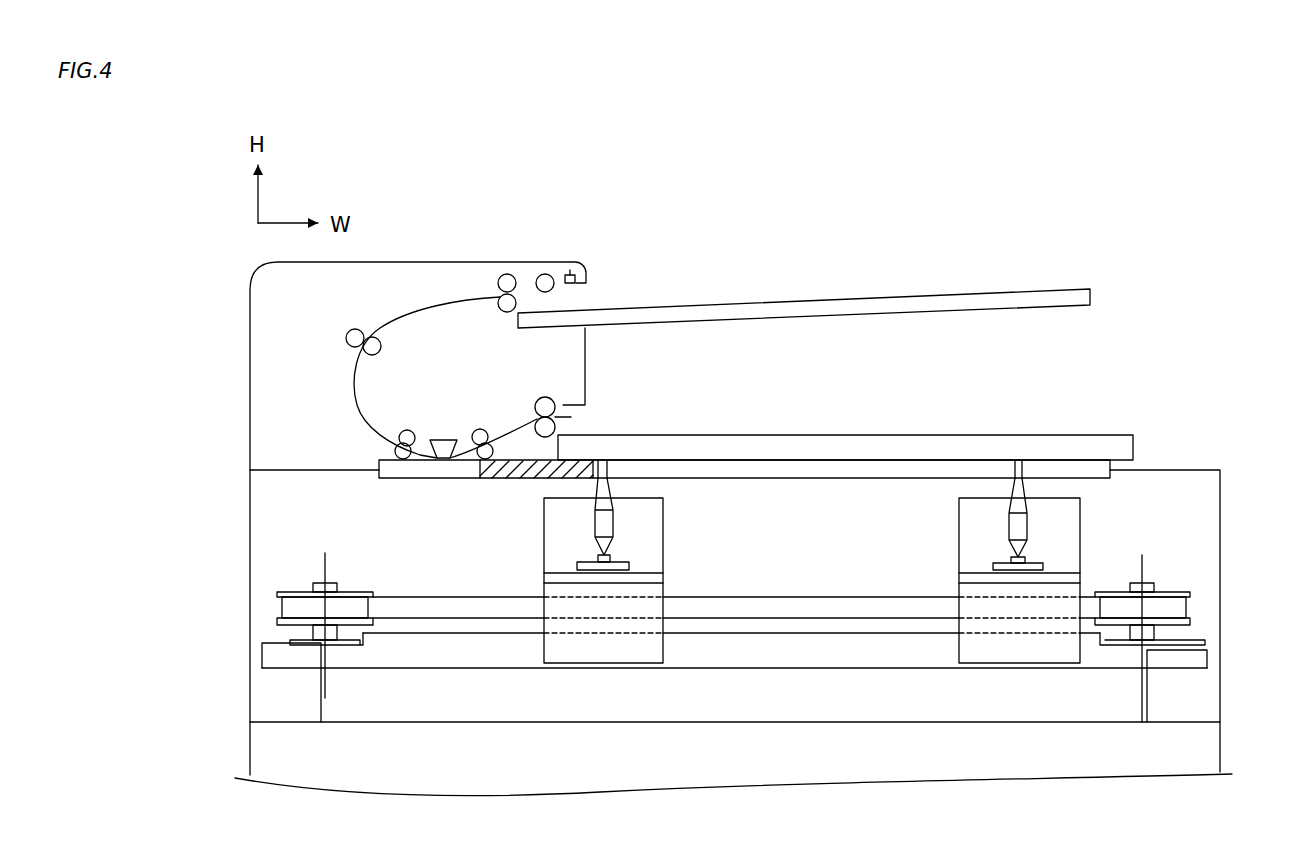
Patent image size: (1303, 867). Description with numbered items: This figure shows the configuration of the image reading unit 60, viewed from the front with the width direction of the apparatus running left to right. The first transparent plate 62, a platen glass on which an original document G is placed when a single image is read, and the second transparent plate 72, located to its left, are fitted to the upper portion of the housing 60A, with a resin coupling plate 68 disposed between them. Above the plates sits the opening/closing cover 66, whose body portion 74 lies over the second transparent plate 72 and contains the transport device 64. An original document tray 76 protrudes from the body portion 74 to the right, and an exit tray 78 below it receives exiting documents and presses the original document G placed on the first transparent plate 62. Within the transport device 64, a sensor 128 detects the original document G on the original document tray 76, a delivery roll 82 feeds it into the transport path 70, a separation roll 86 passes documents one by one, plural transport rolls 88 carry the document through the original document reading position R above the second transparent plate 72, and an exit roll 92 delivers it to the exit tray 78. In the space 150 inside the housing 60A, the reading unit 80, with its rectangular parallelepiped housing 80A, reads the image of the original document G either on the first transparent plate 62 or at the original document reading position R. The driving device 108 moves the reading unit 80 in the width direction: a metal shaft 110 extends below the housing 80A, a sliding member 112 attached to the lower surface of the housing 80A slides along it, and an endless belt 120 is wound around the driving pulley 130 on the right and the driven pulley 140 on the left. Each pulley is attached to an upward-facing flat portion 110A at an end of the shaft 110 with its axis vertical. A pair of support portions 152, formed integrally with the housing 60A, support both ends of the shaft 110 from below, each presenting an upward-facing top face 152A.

The image reading unit 60 is at (1224, 282).
The housing 60A is at (1222, 535).
The first transparent plate 62 is at (1090, 480).
The transport device 64 is at (404, 282).
The opening/closing cover 66 is at (246, 314).
The coupling plate 68 is at (500, 479).
The transport path 70 is at (460, 305).
The second transparent plate 72 is at (394, 479).
The body portion 74 is at (450, 262).
The original document tray 76 is at (1088, 306).
The exit tray 78 is at (1088, 434).
The reading unit 80 is at (668, 528).
The housing 80A is at (664, 553).
The delivery roll 82 is at (545, 274).
The separation roll 86 is at (507, 274).
The transport rolls 88 is at (346, 338).
The exit roll 92 is at (545, 397).
The driving device 108 is at (494, 682).
The shaft 110 is at (913, 670).
The flat portions 110A is at (273, 643).
The sliding member 112 is at (668, 608).
The endless belt 120 is at (400, 596).
The sensor 128 is at (570, 271).
The driving pulley 130 is at (1167, 580).
The driven pulley 140 is at (300, 580).
The space 150 is at (1203, 496).
The support portions 152 is at (328, 700).
The top face 152A is at (260, 645).
The original document G is at (920, 446).
The original document reading position R is at (447, 440).